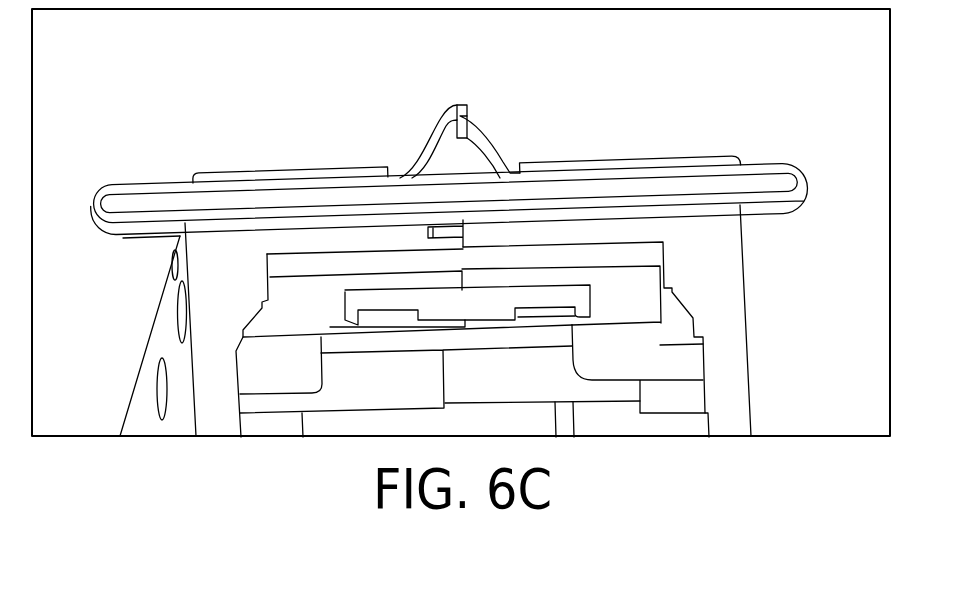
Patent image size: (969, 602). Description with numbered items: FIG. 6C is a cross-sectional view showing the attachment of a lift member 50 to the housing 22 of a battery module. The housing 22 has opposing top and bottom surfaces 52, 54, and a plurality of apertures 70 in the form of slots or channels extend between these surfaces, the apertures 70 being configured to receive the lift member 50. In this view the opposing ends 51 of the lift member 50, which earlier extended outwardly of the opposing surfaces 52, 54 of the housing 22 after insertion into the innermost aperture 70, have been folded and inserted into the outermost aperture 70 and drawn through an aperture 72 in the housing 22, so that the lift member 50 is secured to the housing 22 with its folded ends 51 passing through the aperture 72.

The housing 22 is at (757, 312).
The lift member 50 is at (129, 244).
The opposing ends 51 is at (482, 116).
The top surface 52 is at (752, 397).
The bottom surface 54 is at (148, 393).
The apertures 70 is at (742, 156).
The aperture 72 is at (517, 141).